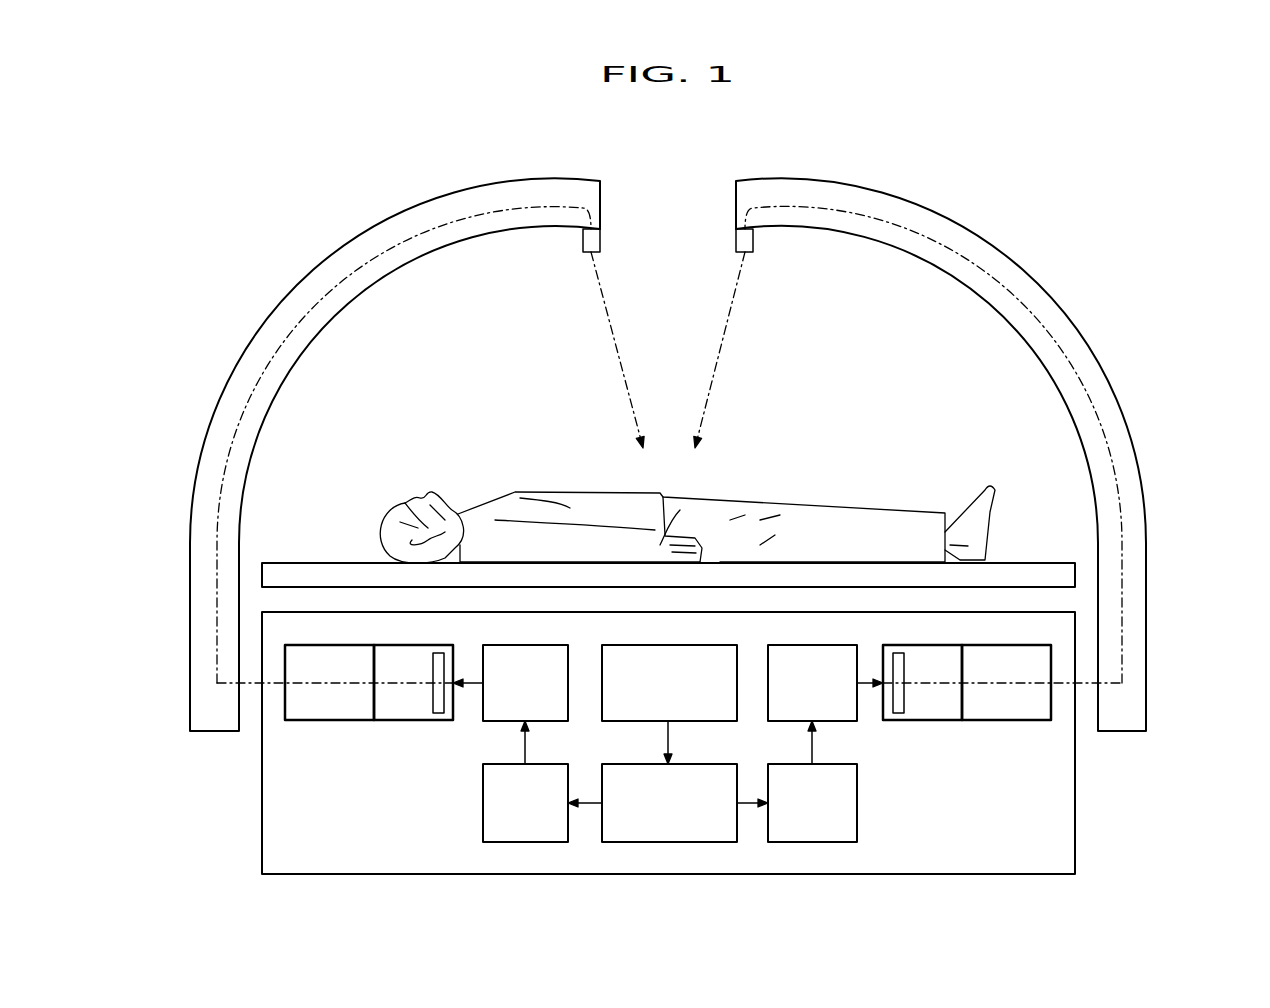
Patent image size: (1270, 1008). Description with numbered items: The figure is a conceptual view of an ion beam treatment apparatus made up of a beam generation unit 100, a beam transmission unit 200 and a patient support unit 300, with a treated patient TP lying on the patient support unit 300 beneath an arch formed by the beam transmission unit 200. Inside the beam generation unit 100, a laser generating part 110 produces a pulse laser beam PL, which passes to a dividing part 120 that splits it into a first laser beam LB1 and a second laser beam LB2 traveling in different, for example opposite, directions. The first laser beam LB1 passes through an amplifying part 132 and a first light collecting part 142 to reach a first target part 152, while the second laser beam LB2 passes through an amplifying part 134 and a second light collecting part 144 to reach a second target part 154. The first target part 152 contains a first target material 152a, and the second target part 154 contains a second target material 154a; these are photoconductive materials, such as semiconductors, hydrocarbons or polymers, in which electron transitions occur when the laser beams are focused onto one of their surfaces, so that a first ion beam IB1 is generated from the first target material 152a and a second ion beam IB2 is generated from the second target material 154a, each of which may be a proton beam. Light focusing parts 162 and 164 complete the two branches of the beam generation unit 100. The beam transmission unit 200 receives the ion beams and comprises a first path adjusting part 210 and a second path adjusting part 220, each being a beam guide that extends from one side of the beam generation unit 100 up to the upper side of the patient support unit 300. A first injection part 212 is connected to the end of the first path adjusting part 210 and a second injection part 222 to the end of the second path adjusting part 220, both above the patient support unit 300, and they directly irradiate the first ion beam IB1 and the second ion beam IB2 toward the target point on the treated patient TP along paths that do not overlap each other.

The beam generation unit 100 is at (1075, 806).
The laser generating part 110 is at (622, 645).
The dividing part 120 is at (622, 842).
The amplifying part 132 is at (503, 842).
The amplifying part 134 is at (788, 842).
The first light collecting part 142 is at (503, 645).
The second light collecting part 144 is at (788, 645).
The first target part 152 is at (383, 721).
The first target material 152a is at (438, 714).
The second target part 154 is at (947, 721).
The second target material 154a is at (896, 714).
The light focusing part 162 is at (326, 721).
The light focusing part 164 is at (1003, 721).
The beam transmission unit 200 is at (668, 454).
The first path adjusting part 210 is at (293, 287).
The first injection part 212 is at (578, 241).
The second path adjusting part 220 is at (1045, 287).
The second injection part 222 is at (755, 241).
The patient support unit 300 is at (1028, 560).
The treated patient TP is at (864, 490).
The first ion beam IB1 is at (608, 315).
The second ion beam IB2 is at (730, 315).
The first laser beam LB1 is at (585, 802).
The second laser beam LB2 is at (750, 802).
The pulse laser beam PL is at (683, 742).